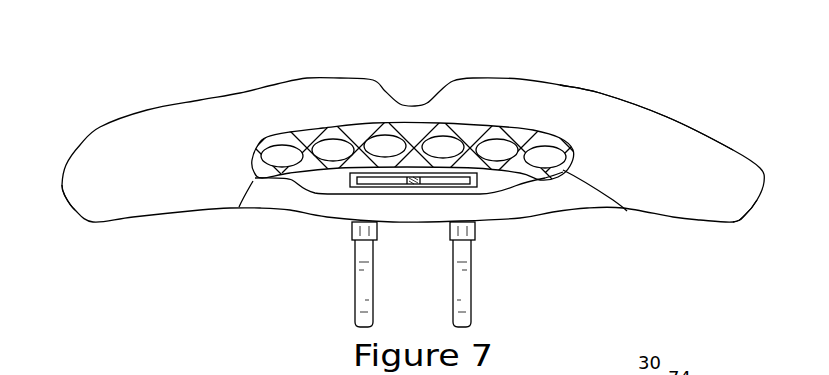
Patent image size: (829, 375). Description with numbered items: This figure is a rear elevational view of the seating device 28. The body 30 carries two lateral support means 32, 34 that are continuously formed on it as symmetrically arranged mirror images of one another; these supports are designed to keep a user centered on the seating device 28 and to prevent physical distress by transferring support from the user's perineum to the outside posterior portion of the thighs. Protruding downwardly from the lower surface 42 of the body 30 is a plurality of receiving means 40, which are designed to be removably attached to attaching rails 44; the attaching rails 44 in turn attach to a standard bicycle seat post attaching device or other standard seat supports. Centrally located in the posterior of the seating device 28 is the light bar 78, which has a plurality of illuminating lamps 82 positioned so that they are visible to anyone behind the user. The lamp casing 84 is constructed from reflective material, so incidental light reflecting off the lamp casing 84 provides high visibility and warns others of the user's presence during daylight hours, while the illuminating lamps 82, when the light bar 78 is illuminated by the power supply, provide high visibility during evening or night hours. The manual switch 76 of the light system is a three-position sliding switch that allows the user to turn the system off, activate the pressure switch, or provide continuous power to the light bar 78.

The seating device 28 is at (103, 112).
The body 30 is at (612, 112).
The lateral support means 32 is at (723, 222).
The lateral support means 34 is at (94, 222).
The receiving means 40 is at (352, 230).
The lower surface 42 is at (414, 222).
The attaching rails 44 is at (362, 303).
The manual switch 76 is at (533, 184).
The light bar 78 is at (254, 186).
The illuminating lamps 82 is at (284, 147).
The lamp casing 84 is at (627, 211).